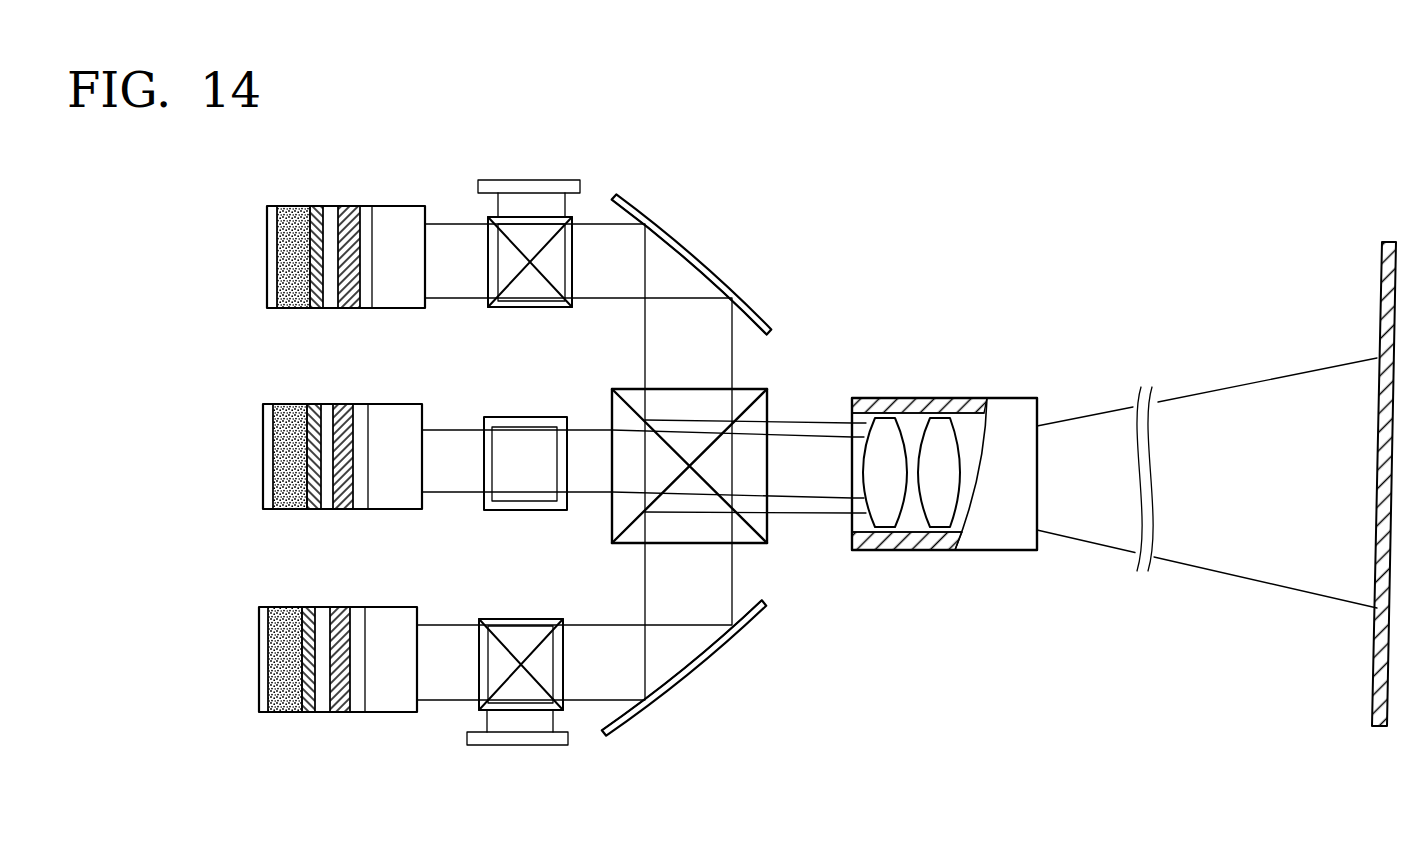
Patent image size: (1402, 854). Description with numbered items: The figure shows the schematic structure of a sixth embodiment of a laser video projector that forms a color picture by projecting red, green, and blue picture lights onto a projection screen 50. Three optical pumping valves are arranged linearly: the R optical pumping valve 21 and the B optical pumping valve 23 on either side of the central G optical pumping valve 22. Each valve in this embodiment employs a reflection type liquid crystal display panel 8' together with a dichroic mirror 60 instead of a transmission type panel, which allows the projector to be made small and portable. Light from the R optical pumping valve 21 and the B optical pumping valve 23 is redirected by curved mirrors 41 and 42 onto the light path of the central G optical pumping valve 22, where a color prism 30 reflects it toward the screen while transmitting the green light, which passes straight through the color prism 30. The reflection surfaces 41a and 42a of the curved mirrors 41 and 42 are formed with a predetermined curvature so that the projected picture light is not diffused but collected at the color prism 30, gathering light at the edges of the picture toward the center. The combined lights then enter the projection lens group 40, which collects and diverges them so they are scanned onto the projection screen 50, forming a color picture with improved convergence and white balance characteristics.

The R optical pumping valve 21 is at (374, 206).
The G optical pumping valve 22 is at (373, 404).
The B optical pumping valve 23 is at (366, 607).
The reflection type liquid crystal display panel 8' is at (523, 465).
The dichroic mirror 60 is at (498, 308).
The color prism 30 is at (775, 552).
The curved mirror 41 is at (762, 289).
The reflection surface 41a is at (698, 253).
The curved mirror 42 is at (753, 643).
The reflection surface 42a is at (686, 684).
The projection lens group 40 is at (999, 552).
The projection screen 50 is at (1378, 310).